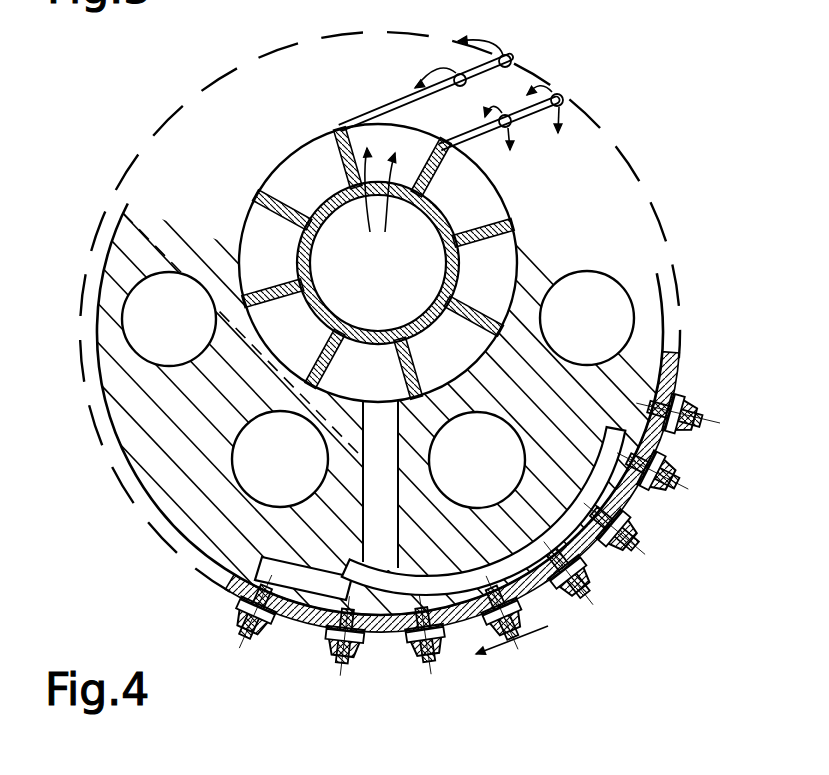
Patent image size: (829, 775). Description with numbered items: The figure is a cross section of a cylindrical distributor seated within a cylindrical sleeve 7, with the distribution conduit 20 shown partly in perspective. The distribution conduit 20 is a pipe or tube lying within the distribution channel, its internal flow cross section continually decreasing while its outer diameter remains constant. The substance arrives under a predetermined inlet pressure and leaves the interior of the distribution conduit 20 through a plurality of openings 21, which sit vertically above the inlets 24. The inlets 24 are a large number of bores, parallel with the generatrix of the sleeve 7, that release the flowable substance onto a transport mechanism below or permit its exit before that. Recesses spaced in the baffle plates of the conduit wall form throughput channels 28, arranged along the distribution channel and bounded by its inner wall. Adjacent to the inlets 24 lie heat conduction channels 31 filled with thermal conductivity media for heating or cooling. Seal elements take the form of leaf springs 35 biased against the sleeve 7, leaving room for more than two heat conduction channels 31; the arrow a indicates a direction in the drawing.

The sleeve 7 is at (665, 441).
The distribution conduit 20 is at (418, 252).
The openings 21 is at (378, 178).
The inlets 24 is at (380, 483).
The throughput channels 28 is at (503, 116).
The heat conduction channels 31 is at (157, 333).
The leaf springs 35 is at (320, 578).
The direction of rotation a is at (519, 632).